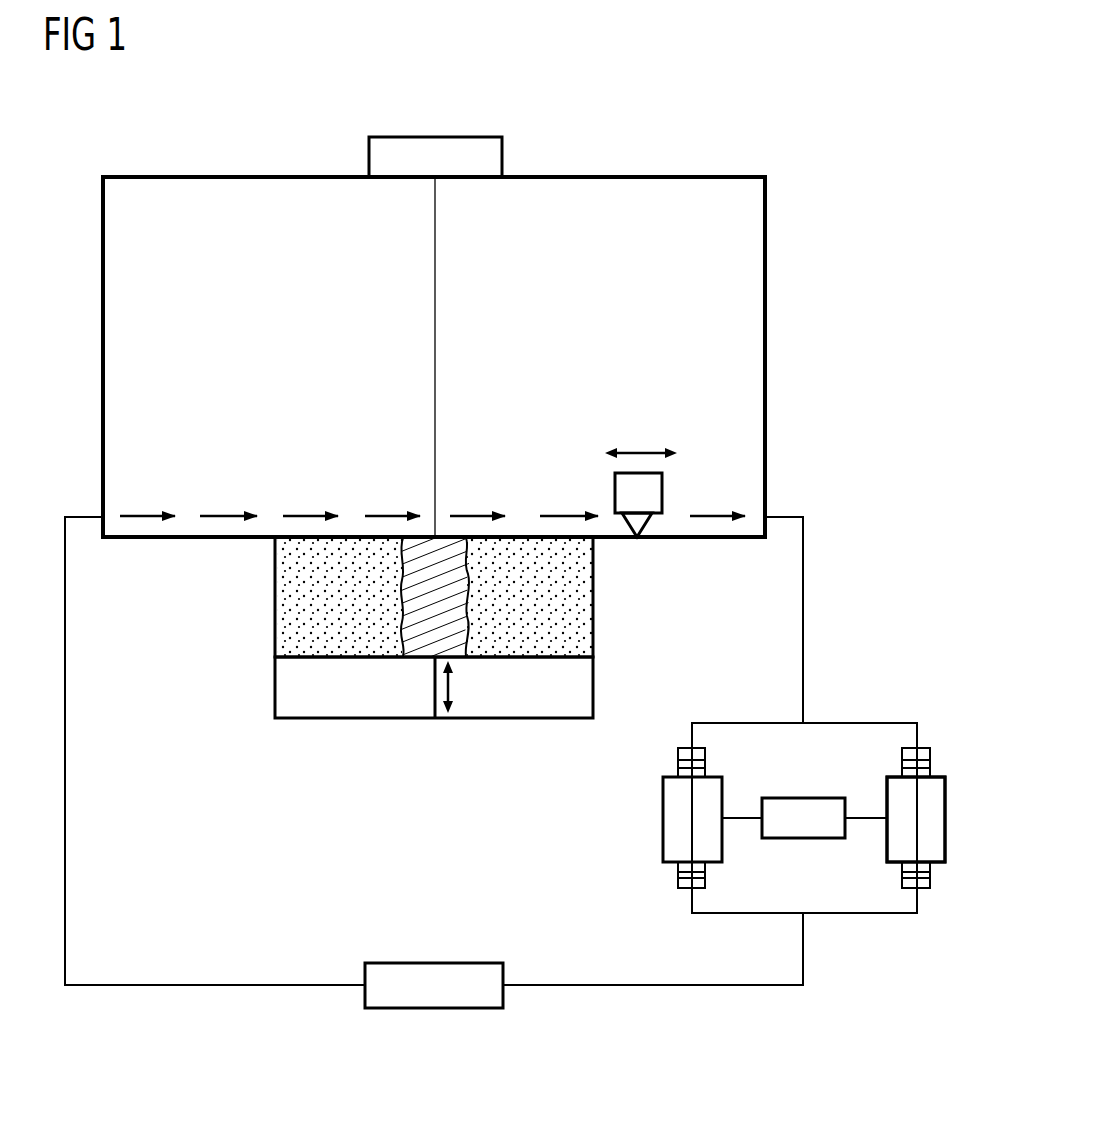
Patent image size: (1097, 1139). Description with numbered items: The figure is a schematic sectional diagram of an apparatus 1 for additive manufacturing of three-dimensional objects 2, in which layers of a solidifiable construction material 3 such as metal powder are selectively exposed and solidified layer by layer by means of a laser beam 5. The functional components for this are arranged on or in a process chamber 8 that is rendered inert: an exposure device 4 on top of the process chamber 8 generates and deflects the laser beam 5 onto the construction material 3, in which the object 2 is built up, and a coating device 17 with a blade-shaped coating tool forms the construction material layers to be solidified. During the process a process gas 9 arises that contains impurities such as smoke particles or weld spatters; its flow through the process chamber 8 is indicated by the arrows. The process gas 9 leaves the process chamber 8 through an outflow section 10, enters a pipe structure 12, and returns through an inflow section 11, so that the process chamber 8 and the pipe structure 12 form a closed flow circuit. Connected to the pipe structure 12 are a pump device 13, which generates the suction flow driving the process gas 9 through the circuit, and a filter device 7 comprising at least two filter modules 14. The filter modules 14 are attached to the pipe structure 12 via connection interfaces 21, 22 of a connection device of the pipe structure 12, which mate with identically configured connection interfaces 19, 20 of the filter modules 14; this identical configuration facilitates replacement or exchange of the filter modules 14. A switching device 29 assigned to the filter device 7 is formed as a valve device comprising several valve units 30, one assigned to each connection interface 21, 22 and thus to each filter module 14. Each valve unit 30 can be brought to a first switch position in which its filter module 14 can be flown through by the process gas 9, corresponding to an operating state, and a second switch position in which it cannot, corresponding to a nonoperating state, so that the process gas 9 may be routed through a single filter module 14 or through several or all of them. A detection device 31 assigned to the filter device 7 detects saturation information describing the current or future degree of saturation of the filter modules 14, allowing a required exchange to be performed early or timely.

The apparatus 1 is at (713, 90).
The three-dimensional object 2 is at (414, 645).
The construction material 3 is at (583, 598).
The exposure device 4 is at (418, 137).
The laser beam 5 is at (435, 310).
The filter device 7 is at (831, 681).
The process chamber 8 is at (765, 378).
The process gas 9 is at (311, 503).
The outflow section 10 is at (765, 517).
The inflow section 11 is at (103, 517).
The pipe structure 12 is at (805, 585).
The pump device 13 is at (427, 1008).
The filter module 14 is at (670, 820).
The coating device 17 is at (662, 498).
The connection interface 19 is at (678, 772).
The connection interface 20 is at (680, 870).
The connection interface 21 is at (680, 760).
The connection interface 22 is at (683, 878).
The switching device 29 is at (906, 704).
The valve unit 30 is at (685, 748).
The detection device 31 is at (777, 840).